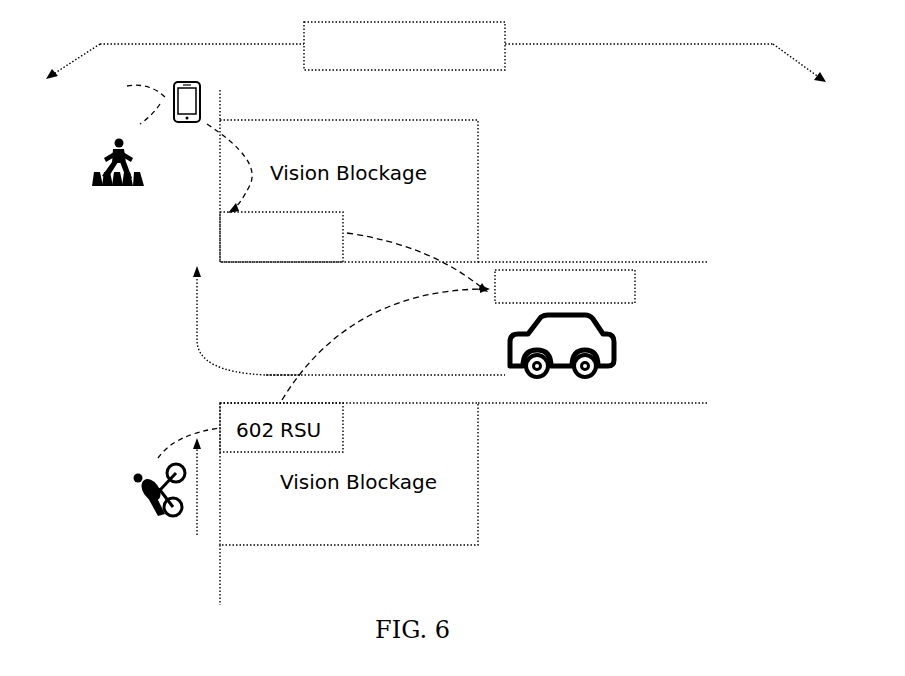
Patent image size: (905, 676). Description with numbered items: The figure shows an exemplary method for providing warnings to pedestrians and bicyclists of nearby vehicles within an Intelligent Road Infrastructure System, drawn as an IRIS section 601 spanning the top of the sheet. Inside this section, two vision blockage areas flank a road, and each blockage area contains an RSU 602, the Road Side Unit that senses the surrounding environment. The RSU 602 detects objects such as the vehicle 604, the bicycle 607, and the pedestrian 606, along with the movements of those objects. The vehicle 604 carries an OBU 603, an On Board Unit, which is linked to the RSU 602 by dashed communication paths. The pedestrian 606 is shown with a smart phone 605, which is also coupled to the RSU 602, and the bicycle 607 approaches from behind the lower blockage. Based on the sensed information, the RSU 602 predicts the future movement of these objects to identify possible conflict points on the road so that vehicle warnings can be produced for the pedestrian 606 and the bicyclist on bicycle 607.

The IRIS section 601 is at (436, 52).
The RSU 602 is at (354, 252).
The OBU 603 is at (565, 286).
The vehicle 604 is at (631, 346).
The smart phone 605 is at (175, 136).
The pedestrian 606 is at (118, 177).
The bicycle 607 is at (149, 490).